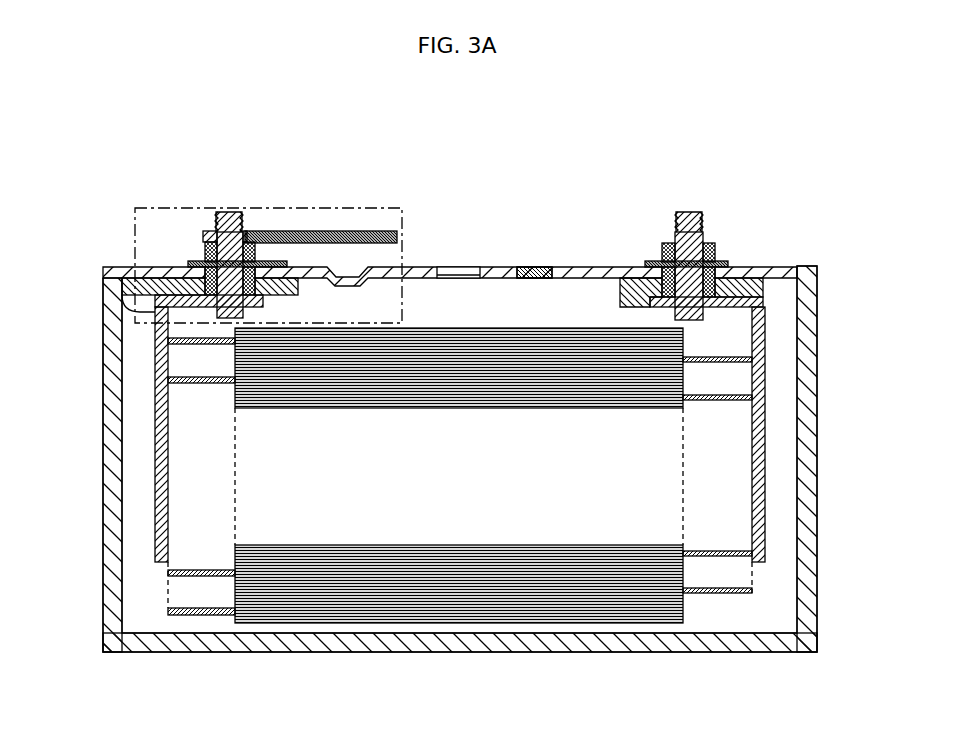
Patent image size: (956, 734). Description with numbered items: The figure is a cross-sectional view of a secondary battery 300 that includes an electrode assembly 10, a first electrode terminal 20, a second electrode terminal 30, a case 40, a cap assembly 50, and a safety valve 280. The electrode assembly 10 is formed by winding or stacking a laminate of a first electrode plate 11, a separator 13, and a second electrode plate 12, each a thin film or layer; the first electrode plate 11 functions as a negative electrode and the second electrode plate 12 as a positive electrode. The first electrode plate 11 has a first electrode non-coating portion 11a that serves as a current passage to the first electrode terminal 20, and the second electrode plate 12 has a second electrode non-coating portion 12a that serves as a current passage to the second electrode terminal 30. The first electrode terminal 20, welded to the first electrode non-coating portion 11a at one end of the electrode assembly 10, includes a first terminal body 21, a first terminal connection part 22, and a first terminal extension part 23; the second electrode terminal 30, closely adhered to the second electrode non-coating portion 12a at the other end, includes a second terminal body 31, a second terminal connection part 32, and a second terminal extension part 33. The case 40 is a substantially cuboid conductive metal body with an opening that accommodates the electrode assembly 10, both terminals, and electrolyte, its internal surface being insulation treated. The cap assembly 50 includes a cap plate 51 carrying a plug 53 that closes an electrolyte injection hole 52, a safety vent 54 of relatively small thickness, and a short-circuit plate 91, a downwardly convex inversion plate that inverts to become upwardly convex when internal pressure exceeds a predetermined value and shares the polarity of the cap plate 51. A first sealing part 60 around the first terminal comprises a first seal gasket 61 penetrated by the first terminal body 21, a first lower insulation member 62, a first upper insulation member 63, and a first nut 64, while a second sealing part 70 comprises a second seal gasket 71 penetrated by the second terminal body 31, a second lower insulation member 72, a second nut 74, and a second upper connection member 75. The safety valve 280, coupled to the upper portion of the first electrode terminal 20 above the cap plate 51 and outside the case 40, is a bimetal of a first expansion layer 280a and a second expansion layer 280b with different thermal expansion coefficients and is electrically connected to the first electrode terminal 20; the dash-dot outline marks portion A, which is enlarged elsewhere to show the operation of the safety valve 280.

The secondary battery 300 is at (78, 131).
The electrode assembly 10 is at (460, 504).
The first electrode plate 11 is at (290, 623).
The first electrode non-coating portion 11a is at (207, 615).
The second electrode plate 12 is at (593, 598).
The second electrode non-coating portion 12a is at (707, 596).
The separator 13 is at (355, 623).
The first electrode terminal 20 is at (191, 229).
The first terminal body 21 is at (195, 245).
The first terminal connection part 22 is at (182, 285).
The first terminal extension part 23 is at (122, 295).
The portion A is at (197, 208).
The second electrode terminal 30 is at (774, 250).
The second terminal body 31 is at (714, 245).
The second terminal connection part 32 is at (744, 266).
The second terminal extension part 33 is at (765, 330).
The case 40 is at (800, 448).
The cap assembly 50 is at (450, 266).
The cap plate 51 is at (425, 267).
The electrolyte injection hole 52 is at (518, 267).
The plug 53 is at (545, 267).
The safety vent 54 is at (458, 267).
The first sealing part 60 is at (267, 217).
The first seal gasket 61 is at (282, 264).
The first lower insulation member 62 is at (240, 171).
The first upper insulation member 63 is at (255, 250).
The first nut 64 is at (244, 231).
The second sealing part 70 is at (666, 230).
The second seal gasket 71 is at (665, 273).
The second lower insulation member 72 is at (645, 263).
The second nut 74 is at (681, 246).
The second upper connection member 75 is at (665, 245).
The short-circuit plate 91 is at (363, 279).
The safety valve 280 is at (360, 221).
The first expansion layer 280a is at (395, 231).
The second expansion layer 280b is at (398, 242).